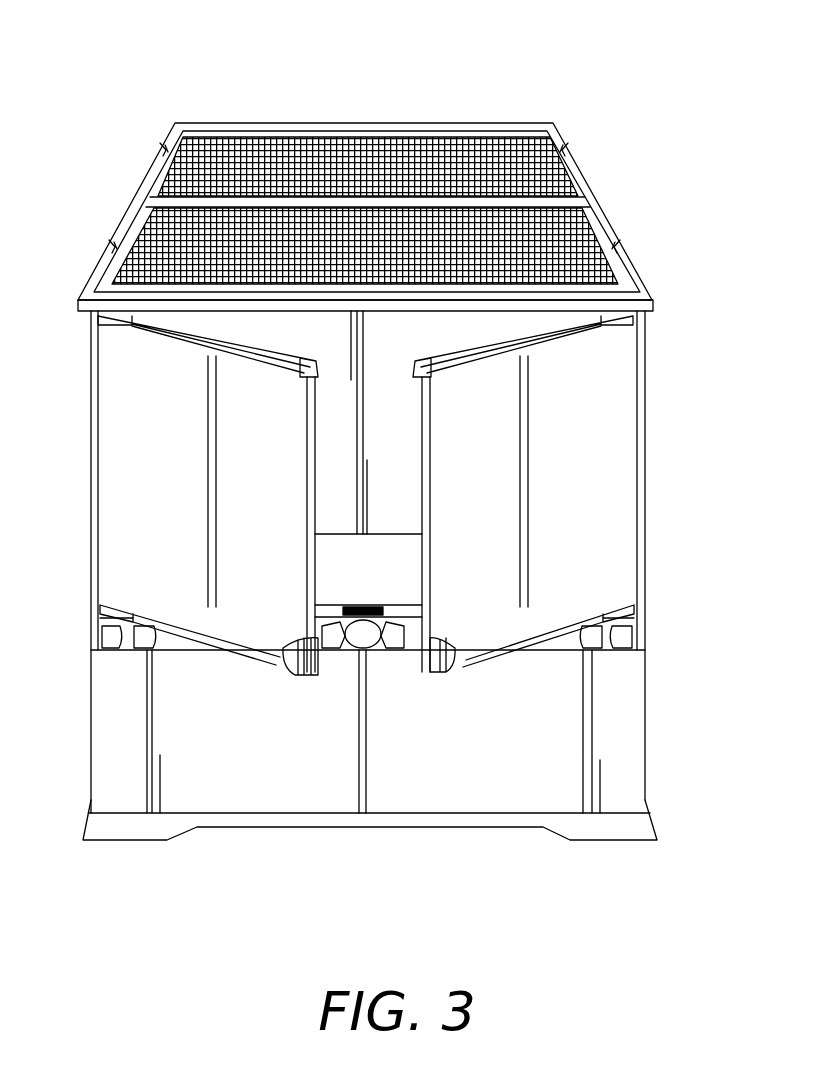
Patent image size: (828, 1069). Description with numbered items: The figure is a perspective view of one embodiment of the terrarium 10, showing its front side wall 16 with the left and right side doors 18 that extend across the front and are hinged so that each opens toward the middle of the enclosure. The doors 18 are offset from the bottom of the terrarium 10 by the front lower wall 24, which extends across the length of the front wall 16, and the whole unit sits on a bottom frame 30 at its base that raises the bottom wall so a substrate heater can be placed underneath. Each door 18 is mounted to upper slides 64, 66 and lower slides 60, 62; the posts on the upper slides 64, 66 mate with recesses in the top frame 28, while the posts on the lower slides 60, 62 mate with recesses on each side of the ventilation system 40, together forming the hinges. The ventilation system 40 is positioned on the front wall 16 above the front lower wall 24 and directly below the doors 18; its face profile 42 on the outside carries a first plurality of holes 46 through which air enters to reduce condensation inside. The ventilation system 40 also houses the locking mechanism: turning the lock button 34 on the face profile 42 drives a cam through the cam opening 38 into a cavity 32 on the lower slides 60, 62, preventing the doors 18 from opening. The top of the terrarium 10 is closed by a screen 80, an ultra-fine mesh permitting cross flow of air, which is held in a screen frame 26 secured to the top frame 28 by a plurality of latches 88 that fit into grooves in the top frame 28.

The terrarium 10 is at (186, 77).
The front side wall 16 is at (120, 785).
The side doors 18 is at (152, 498).
The front lower wall 24 is at (282, 789).
The screen frame 26 is at (165, 204).
The top frame 28 is at (598, 192).
The bottom frame 30 is at (590, 841).
The cavity 32 is at (302, 637).
The lock button 34 is at (373, 648).
The cam opening 38 is at (363, 607).
The ventilation system 40 is at (128, 657).
The face profile 42 is at (632, 618).
The first plurality of holes 46 is at (626, 652).
The lower left slide 60 is at (275, 669).
The lower right slide 62 is at (540, 650).
The upper left slide 64 is at (178, 336).
The upper right slide 66 is at (582, 336).
The screen 80 is at (455, 140).
The latches 88 is at (570, 152).